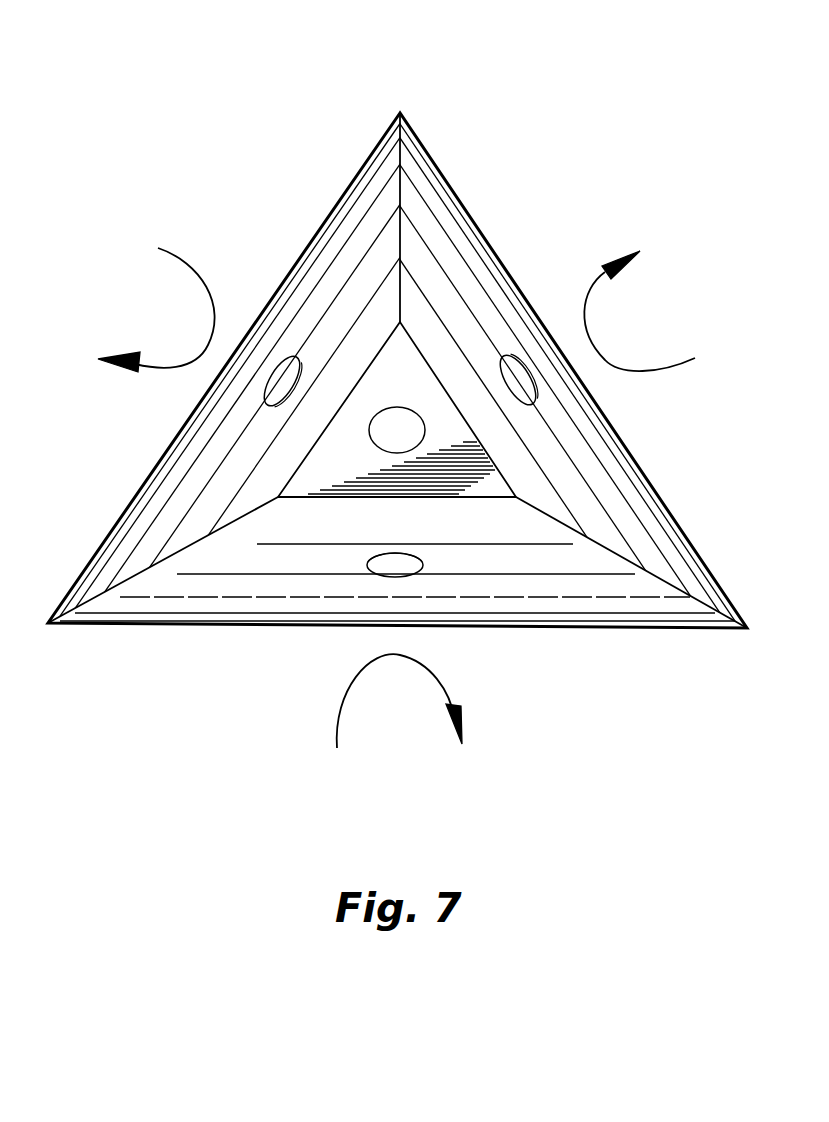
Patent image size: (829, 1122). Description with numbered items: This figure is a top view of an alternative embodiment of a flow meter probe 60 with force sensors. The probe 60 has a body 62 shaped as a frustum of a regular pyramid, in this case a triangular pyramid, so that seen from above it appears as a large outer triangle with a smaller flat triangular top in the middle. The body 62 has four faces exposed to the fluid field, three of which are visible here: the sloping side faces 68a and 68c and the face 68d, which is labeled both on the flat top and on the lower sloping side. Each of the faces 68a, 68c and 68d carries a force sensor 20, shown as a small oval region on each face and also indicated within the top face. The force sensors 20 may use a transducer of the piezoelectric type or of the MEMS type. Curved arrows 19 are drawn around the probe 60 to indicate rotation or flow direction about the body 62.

The flow meter probe 60 is at (262, 98).
The body 62 is at (458, 249).
The face 68a is at (657, 528).
The face 68c is at (128, 533).
The face 68d is at (415, 388).
The force sensor 20 is at (407, 441).
The rotation direction arrows 19 is at (200, 357).